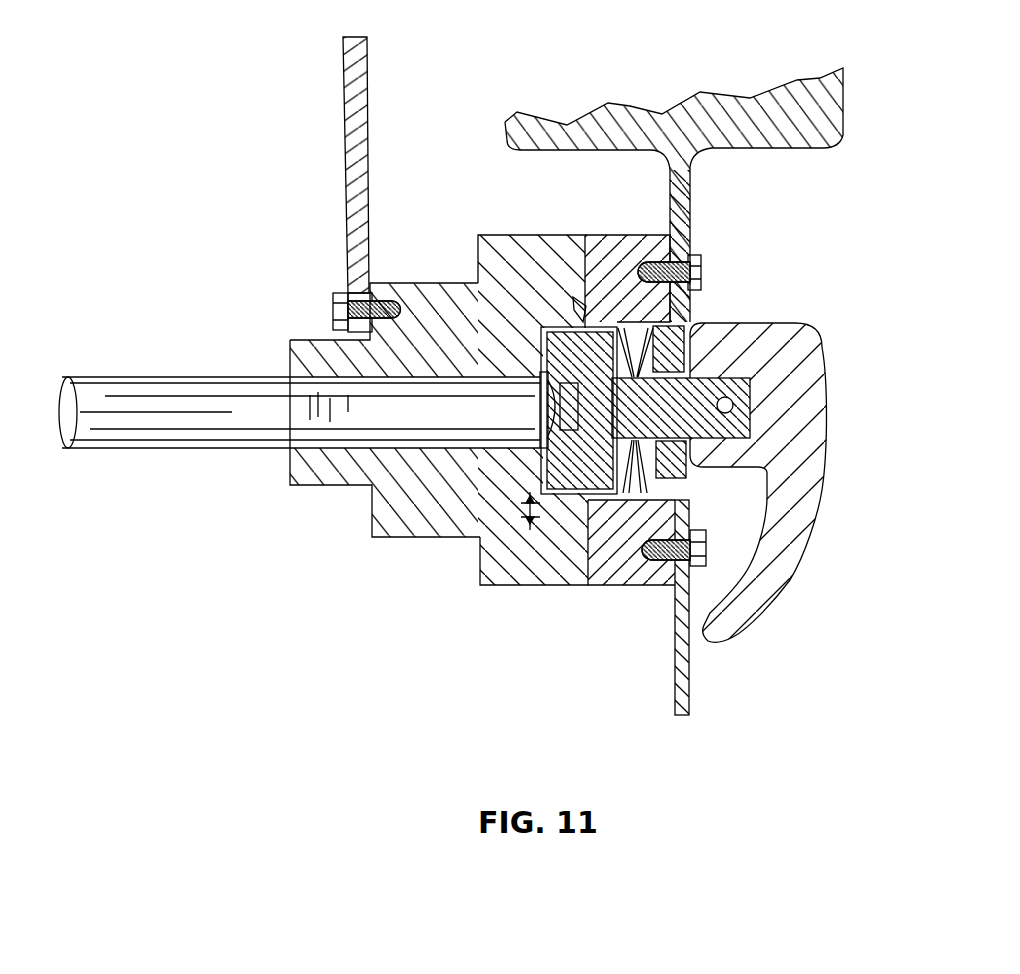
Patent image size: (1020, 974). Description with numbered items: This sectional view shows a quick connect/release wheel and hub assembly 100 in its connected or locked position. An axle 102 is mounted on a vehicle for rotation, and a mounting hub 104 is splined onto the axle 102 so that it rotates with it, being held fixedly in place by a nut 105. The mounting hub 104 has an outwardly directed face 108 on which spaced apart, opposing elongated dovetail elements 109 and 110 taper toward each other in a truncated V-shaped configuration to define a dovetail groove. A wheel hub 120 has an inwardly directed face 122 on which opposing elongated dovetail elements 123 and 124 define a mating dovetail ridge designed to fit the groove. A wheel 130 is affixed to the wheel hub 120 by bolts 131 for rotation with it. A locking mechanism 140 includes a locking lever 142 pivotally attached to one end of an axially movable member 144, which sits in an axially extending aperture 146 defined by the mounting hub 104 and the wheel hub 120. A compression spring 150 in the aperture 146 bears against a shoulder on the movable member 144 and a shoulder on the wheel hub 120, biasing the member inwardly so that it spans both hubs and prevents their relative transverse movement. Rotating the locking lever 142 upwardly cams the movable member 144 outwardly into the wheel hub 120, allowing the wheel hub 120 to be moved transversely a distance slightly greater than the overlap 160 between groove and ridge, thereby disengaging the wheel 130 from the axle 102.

The quick connect/release wheel and hub assembly 100 is at (205, 566).
The axle 102 is at (100, 430).
The mounting hub 104 is at (348, 513).
The nut 105 is at (540, 405).
The outwardly directed face 108 is at (580, 290).
The elongated dovetail element 109 is at (577, 300).
The elongated dovetail element 110 is at (585, 500).
The wheel hub 120 is at (648, 580).
The inwardly directed face 122 is at (616, 235).
The elongated dovetail element 123 is at (690, 328).
The elongated dovetail element 124 is at (695, 548).
The wheel 130 is at (790, 130).
The bolts 131 is at (700, 262).
The locking mechanism 140 is at (830, 338).
The locking lever 142 is at (805, 458).
The axially movable member 144 is at (752, 392).
The axially extending aperture 146 is at (672, 482).
The compression spring 150 is at (684, 504).
The overlap 160 is at (560, 502).